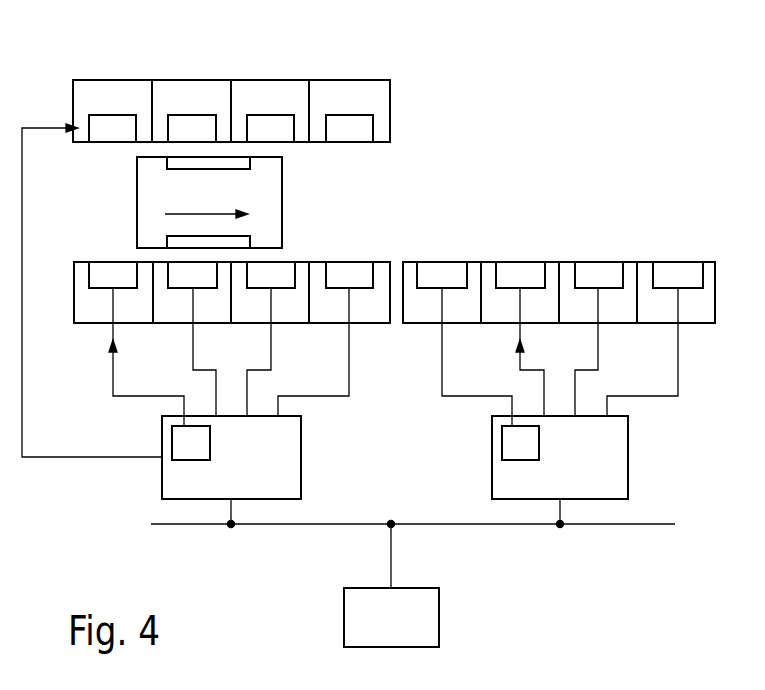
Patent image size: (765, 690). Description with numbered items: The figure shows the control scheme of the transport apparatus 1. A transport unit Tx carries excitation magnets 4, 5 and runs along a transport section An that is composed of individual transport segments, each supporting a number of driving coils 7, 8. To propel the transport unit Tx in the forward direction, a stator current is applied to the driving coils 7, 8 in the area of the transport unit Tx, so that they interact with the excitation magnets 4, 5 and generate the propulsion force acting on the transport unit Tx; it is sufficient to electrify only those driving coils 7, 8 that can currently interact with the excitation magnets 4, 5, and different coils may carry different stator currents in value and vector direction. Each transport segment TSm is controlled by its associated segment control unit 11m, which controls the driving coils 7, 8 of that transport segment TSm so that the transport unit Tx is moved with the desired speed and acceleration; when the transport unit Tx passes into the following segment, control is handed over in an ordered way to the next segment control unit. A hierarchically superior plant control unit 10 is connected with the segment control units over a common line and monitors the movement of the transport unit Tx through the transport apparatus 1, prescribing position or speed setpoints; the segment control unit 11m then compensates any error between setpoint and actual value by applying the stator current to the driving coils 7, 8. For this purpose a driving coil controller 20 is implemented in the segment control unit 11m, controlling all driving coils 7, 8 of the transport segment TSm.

The transport apparatus 1 is at (449, 106).
The excitation magnet 4 is at (188, 164).
The excitation magnet 5 is at (233, 242).
The driving coil 7 is at (265, 131).
The driving coil 8 is at (433, 277).
The plant control unit 10 is at (405, 624).
The segment control unit 11m is at (283, 483).
The driving coil controller 20 is at (355, 443).
The transport unit Tx is at (147, 153).
The transport segment TSm is at (292, 166).
The transport section An is at (509, 219).